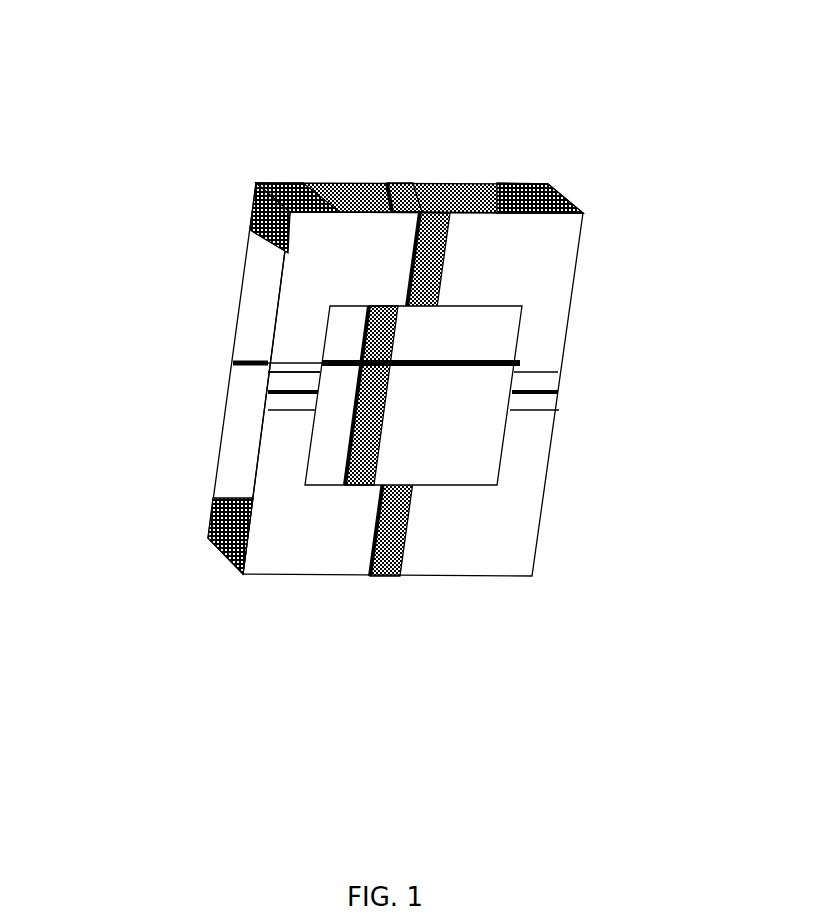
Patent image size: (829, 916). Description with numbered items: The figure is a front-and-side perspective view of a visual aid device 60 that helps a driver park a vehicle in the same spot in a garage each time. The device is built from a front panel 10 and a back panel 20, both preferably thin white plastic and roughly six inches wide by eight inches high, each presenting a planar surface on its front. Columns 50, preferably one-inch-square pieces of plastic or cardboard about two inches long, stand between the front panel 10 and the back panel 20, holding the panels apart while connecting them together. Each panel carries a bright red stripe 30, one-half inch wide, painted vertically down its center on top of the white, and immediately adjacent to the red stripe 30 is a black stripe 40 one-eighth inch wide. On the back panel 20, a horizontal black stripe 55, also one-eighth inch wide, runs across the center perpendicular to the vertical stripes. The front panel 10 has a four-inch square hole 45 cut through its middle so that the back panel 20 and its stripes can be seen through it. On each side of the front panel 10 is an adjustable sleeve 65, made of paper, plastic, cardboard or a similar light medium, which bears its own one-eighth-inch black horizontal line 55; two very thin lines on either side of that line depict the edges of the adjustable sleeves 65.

The front panel 10 is at (503, 520).
The back panel 20 is at (467, 200).
The red stripe 30 is at (373, 395).
The black stripe 40 is at (360, 393).
The square hole 45 is at (338, 285).
The columns 50 is at (267, 208).
The horizontal black stripe 55 is at (253, 362).
The visual aid device 60 is at (397, 349).
The adjustable sleeve 65 is at (280, 349).